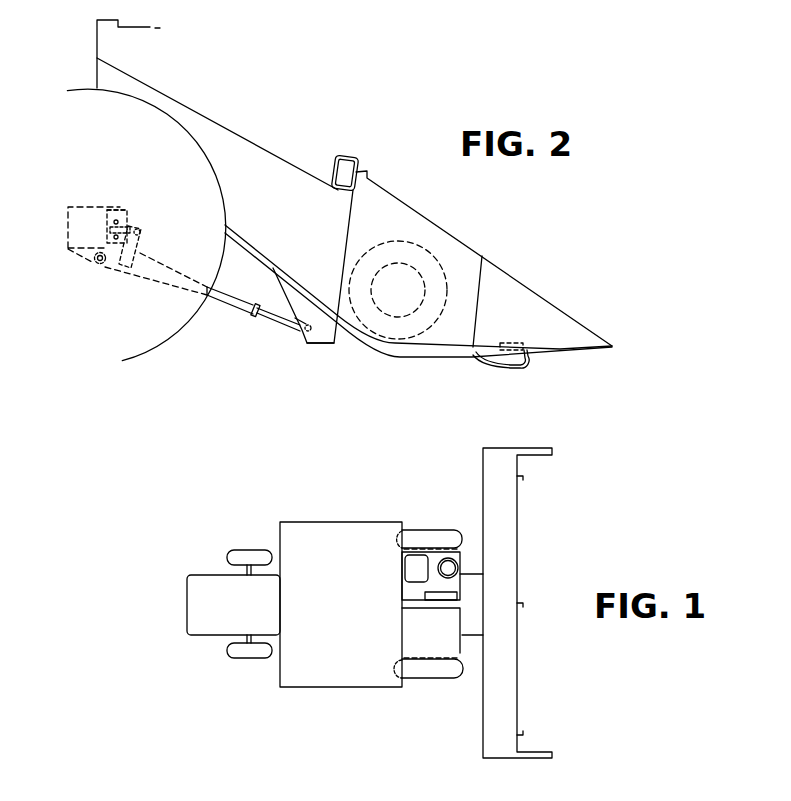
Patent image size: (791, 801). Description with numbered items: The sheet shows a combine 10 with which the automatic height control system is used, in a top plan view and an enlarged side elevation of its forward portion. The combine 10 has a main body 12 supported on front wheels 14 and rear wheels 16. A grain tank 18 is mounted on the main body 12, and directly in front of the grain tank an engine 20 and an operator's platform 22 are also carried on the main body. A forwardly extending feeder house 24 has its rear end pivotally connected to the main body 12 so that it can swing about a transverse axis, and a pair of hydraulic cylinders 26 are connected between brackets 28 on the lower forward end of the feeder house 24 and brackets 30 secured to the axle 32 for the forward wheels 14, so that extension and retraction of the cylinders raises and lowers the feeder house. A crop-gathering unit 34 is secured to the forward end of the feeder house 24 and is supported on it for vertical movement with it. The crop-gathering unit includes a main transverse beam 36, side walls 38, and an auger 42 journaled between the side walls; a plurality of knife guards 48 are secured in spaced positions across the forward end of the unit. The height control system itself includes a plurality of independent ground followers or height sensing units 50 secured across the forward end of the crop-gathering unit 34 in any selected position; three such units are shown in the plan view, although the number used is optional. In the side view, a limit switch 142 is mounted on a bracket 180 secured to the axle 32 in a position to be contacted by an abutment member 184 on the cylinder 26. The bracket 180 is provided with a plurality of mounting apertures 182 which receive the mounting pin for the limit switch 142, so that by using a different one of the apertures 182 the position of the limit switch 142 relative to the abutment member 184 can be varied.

In FIG. 1, the combine 10 is at (341, 598).
In FIG. 1, the main body 12 is at (214, 631).
In FIG. 2, the front wheels 14 is at (152, 338).
In FIG. 1, the front wheels 14 is at (420, 530).
In FIG. 1, the rear wheels 16 is at (250, 554).
In FIG. 1, the grain tank 18 is at (338, 688).
In FIG. 1, the engine 20 is at (461, 650).
In FIG. 1, the operator's platform 22 is at (459, 553).
In FIG. 2, the feeder house 24 is at (228, 131).
In FIG. 1, the feeder house 24 is at (474, 589).
In FIG. 2, the hydraulic cylinders 26 is at (233, 306).
In FIG. 2, the brackets 28 is at (321, 344).
In FIG. 2, the brackets 30 is at (80, 259).
In FIG. 2, the axle 32 is at (83, 203).
In FIG. 1, the crop-gathering unit 34 is at (511, 531).
In FIG. 2, the main transverse beam 36 is at (345, 157).
In FIG. 2, the side walls 38 is at (419, 209).
In FIG. 2, the auger 42 is at (446, 306).
In FIG. 2, the knife guards 48 is at (489, 345).
In FIG. 2, the height sensing units 50 is at (525, 367).
In FIG. 1, the height sensing units 50 is at (521, 478).
In FIG. 2, the limit switch 142 is at (139, 233).
In FIG. 2, the bracket 180 is at (111, 207).
In FIG. 2, the mounting apertures 182 is at (121, 215).
In FIG. 2, the abutment member 184 is at (138, 249).